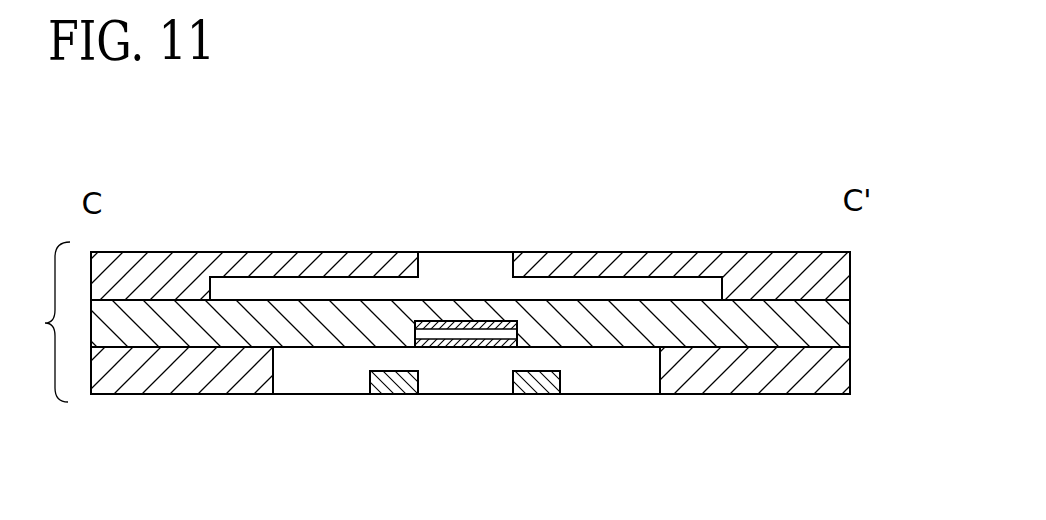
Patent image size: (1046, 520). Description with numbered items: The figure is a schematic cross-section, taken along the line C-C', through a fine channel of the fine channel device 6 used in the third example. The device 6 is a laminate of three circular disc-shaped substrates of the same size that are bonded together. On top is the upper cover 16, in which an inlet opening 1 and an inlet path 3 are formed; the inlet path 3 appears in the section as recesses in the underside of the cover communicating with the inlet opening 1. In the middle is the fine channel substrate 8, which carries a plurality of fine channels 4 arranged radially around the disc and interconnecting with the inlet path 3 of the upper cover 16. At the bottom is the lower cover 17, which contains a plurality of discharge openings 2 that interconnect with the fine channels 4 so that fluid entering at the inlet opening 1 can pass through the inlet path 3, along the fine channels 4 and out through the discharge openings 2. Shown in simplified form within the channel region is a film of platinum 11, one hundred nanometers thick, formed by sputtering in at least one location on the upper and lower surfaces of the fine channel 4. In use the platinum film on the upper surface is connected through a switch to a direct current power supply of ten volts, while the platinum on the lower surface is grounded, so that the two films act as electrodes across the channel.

The inlet opening 1 is at (469, 246).
The discharge openings 2 is at (334, 405).
The inlet path 3 is at (640, 287).
The fine channels 4 is at (465, 358).
The fine channel device 6 is at (433, 322).
The fine channel substrate 8 is at (862, 309).
The film of platinum 11 is at (430, 323).
The upper cover 16 is at (187, 244).
The lower cover 17 is at (187, 405).